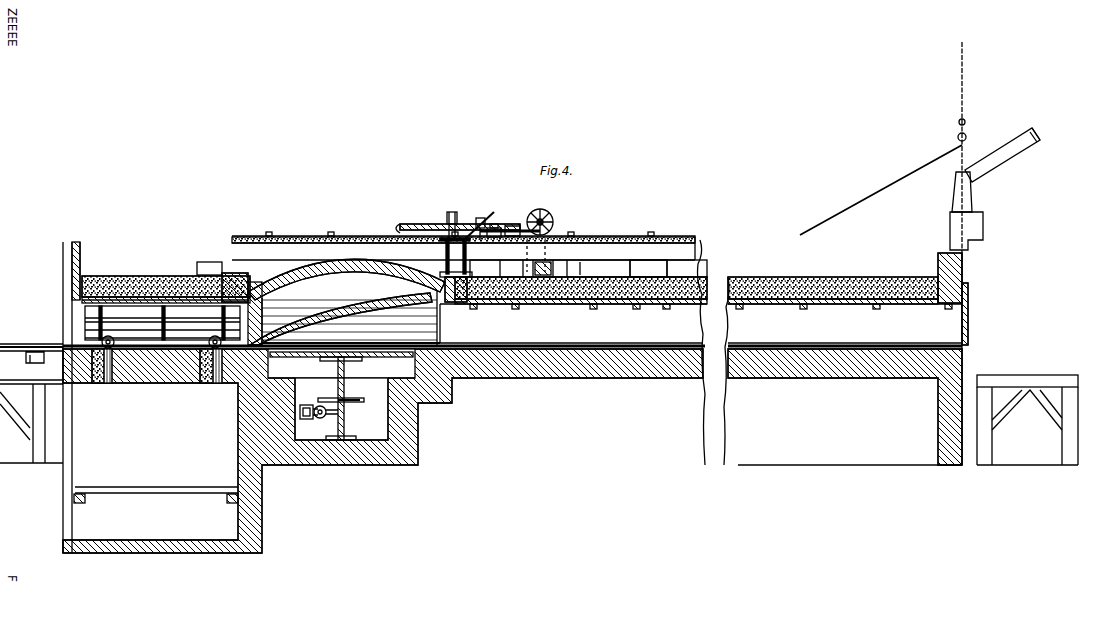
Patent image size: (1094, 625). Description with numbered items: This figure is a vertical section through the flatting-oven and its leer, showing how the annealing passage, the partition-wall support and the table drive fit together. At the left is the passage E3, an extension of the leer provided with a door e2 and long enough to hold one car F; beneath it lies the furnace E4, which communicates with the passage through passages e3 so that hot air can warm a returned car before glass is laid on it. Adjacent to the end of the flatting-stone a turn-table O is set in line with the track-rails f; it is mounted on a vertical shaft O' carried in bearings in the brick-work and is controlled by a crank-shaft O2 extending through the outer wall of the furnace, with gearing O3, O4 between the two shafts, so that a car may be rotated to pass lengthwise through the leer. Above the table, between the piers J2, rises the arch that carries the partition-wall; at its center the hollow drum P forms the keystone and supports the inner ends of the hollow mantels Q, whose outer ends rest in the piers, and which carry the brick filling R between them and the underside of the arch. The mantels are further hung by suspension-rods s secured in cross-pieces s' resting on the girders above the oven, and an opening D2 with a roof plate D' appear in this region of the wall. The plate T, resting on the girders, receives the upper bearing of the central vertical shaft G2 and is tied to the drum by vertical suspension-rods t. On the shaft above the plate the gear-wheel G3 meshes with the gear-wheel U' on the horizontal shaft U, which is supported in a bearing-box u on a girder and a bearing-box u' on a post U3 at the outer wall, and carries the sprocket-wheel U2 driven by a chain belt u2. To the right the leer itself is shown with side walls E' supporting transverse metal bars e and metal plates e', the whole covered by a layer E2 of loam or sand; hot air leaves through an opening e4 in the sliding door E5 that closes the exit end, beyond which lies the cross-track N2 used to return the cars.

The furnace E4 is at (383, 397).
The passages e3 is at (210, 383).
The hollow girders or mantels Q is at (351, 385).
The turn-table O is at (349, 398).
The vertical shaft O' is at (358, 401).
The crank-shaft O2 is at (364, 402).
The wheel O3 is at (322, 418).
The bearing block O4 is at (305, 419).
The car F is at (165, 324).
The passage E3 is at (143, 278).
The door e2 is at (72, 290).
The door D2 is at (210, 264).
The abutments or piers J2 is at (206, 268).
The filling or wall R is at (346, 302).
The cross-pieces s' is at (463, 237).
The roof plate D' is at (463, 232).
The suspension-rods s is at (517, 259).
The hollow casting or drum P is at (588, 268).
The post U3 is at (514, 264).
The chain belt u2 is at (571, 268).
The plate T is at (456, 270).
The vertical suspension-rods t is at (445, 250).
The central vertical shaft G2 is at (452, 212).
The gear-wheel G3 is at (480, 218).
The bearing-box u is at (494, 222).
The gear-wheel U' is at (488, 212).
The shaft U is at (510, 216).
The bearing-box u' is at (540, 231).
The sprocket-wheel U2 is at (554, 220).
The side walls E' is at (573, 310).
The metal plates e' is at (638, 314).
The transverse metal bars e is at (792, 317).
The track-rails f is at (522, 343).
The layer of loam or sand E2 is at (773, 277).
The sliding door E5 is at (970, 320).
The opening e4 is at (968, 303).
The cross-track N2 is at (988, 376).